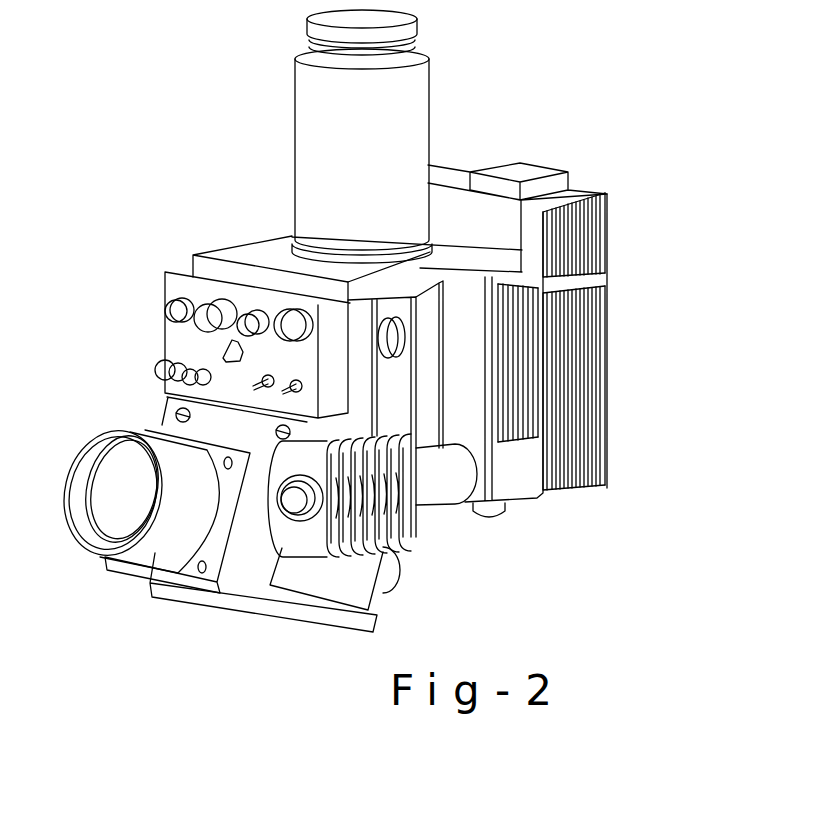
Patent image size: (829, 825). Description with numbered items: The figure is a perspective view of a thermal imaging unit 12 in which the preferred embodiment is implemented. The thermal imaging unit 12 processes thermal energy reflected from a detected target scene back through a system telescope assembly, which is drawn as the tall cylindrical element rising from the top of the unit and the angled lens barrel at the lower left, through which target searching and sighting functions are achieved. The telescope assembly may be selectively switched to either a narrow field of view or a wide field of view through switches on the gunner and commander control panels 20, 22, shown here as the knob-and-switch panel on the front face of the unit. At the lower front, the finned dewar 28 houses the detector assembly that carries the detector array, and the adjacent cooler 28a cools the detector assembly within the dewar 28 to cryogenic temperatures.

The thermal imaging unit 12 is at (648, 203).
The gunner control panel 20 is at (178, 340).
The commander control panel 22 is at (228, 377).
The dewar 28 is at (298, 505).
The cooler 28a is at (445, 473).